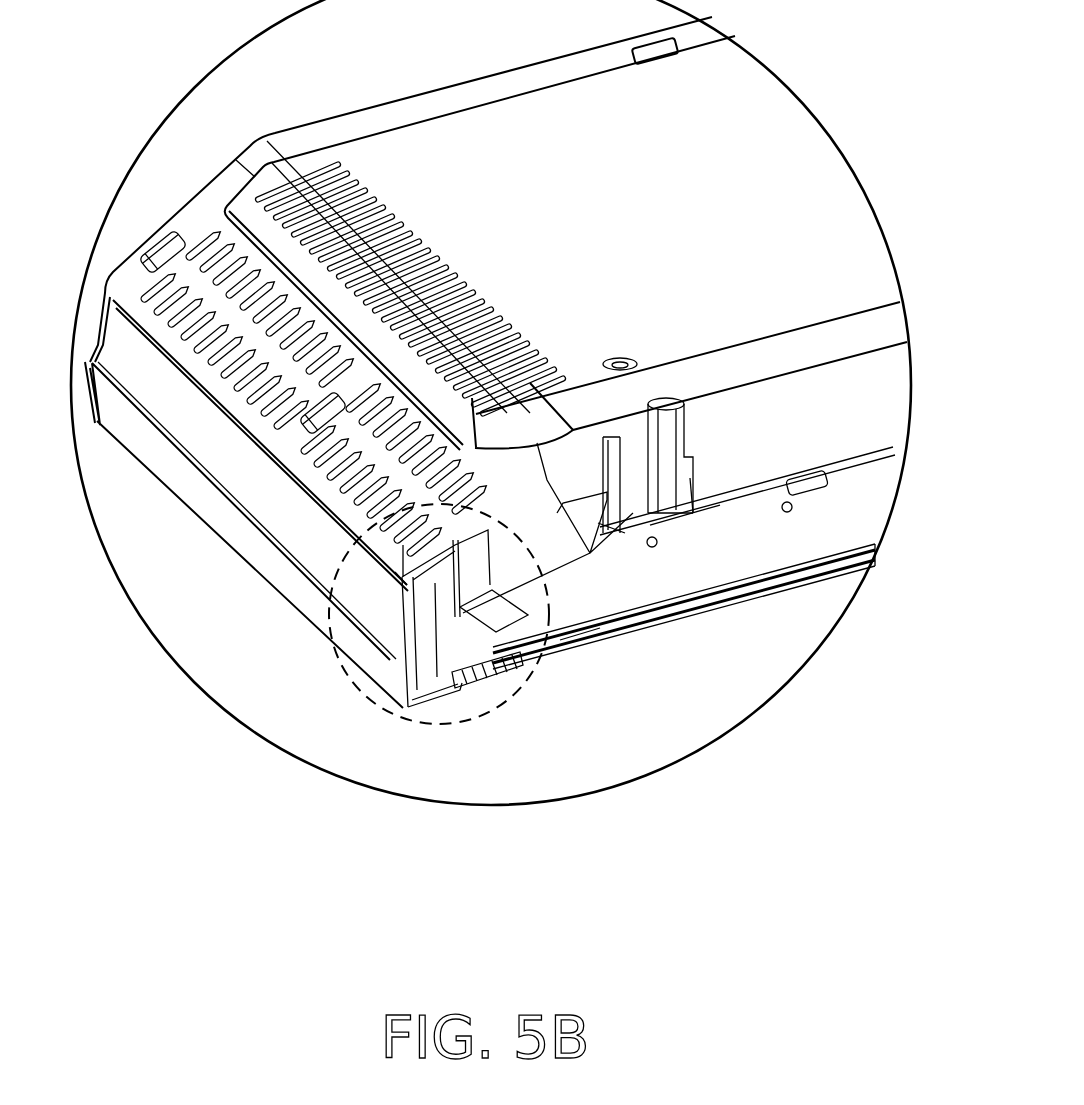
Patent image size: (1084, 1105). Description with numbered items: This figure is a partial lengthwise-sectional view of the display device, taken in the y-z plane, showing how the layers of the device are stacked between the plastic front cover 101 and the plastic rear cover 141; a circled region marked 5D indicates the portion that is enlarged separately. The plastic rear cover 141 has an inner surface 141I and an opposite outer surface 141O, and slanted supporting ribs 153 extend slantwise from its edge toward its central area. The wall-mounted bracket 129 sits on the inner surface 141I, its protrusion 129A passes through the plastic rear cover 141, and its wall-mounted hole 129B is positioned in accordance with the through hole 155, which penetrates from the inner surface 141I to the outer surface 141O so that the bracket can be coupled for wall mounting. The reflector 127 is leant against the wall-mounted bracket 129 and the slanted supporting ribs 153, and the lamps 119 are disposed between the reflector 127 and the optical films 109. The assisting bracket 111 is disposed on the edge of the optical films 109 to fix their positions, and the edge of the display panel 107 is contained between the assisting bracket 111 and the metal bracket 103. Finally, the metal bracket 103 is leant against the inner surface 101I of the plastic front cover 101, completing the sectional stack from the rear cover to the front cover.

The plastic front cover 101 is at (300, 595).
The inner surface of the plastic front cover 101I is at (407, 583).
The metal bracket 103 is at (507, 690).
The display panel 107 is at (542, 660).
The optical films 109 is at (577, 645).
The assisting bracket 111 is at (477, 682).
The lamps 119 is at (793, 500).
The reflector 127 is at (615, 530).
The wall-mounted bracket 129 is at (870, 557).
The protrusion of the wall-mounted bracket 129A is at (690, 478).
The wall-mounted hole 129B is at (684, 520).
The plastic rear cover 141 is at (428, 672).
The inner surface of the plastic rear cover 141I is at (582, 470).
The outer surface of the plastic rear cover 141O is at (645, 383).
The slanted supporting ribs 153 is at (485, 545).
The through hole 155 is at (690, 385).
The detail view region FIG. 5D is at (392, 722).